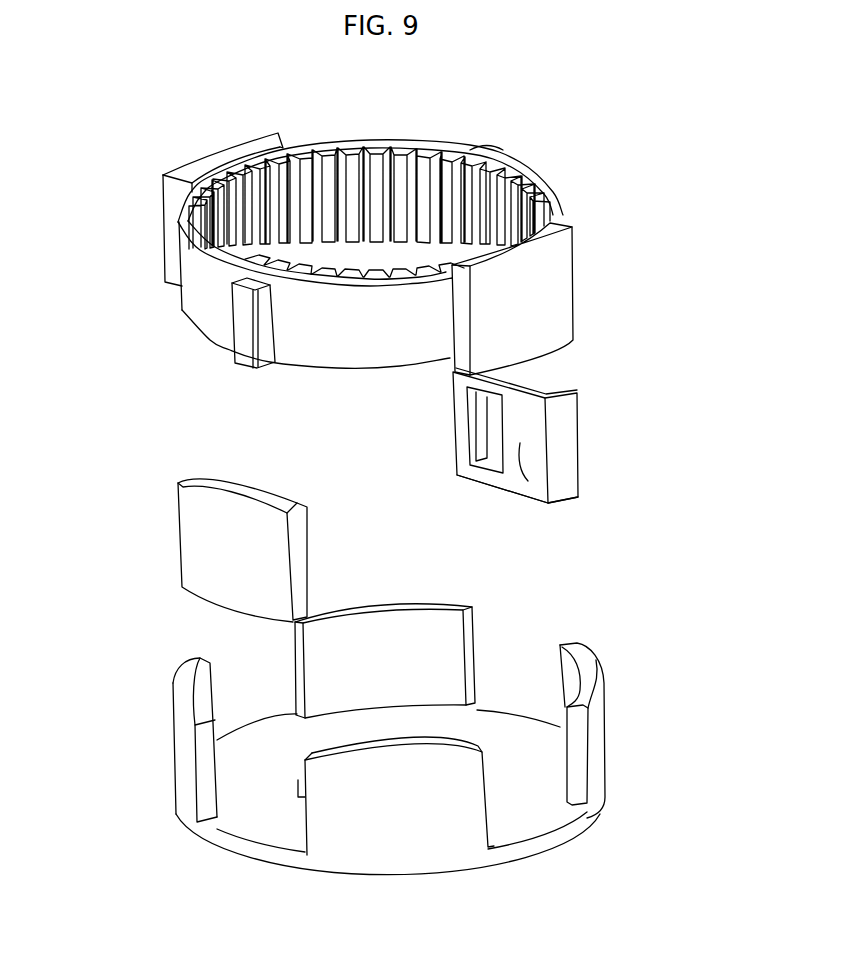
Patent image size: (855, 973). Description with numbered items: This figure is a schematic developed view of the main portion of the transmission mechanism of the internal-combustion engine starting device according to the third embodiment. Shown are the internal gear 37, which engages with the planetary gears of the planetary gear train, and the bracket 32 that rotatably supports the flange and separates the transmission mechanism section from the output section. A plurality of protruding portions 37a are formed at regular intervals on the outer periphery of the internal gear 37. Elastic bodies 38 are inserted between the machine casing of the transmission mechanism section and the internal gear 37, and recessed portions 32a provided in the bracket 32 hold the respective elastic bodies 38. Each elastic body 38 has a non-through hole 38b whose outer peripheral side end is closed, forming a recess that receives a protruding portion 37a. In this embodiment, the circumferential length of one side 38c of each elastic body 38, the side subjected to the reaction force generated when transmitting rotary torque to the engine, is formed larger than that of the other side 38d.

The bracket 32 is at (453, 768).
The recessed portions 32a is at (307, 827).
The internal gear 37 is at (345, 304).
The protruding portions 37a is at (248, 303).
The elastic bodies 38 is at (218, 537).
The non-through holes 38b is at (494, 408).
The one side 38c is at (543, 484).
The other side 38d is at (465, 442).